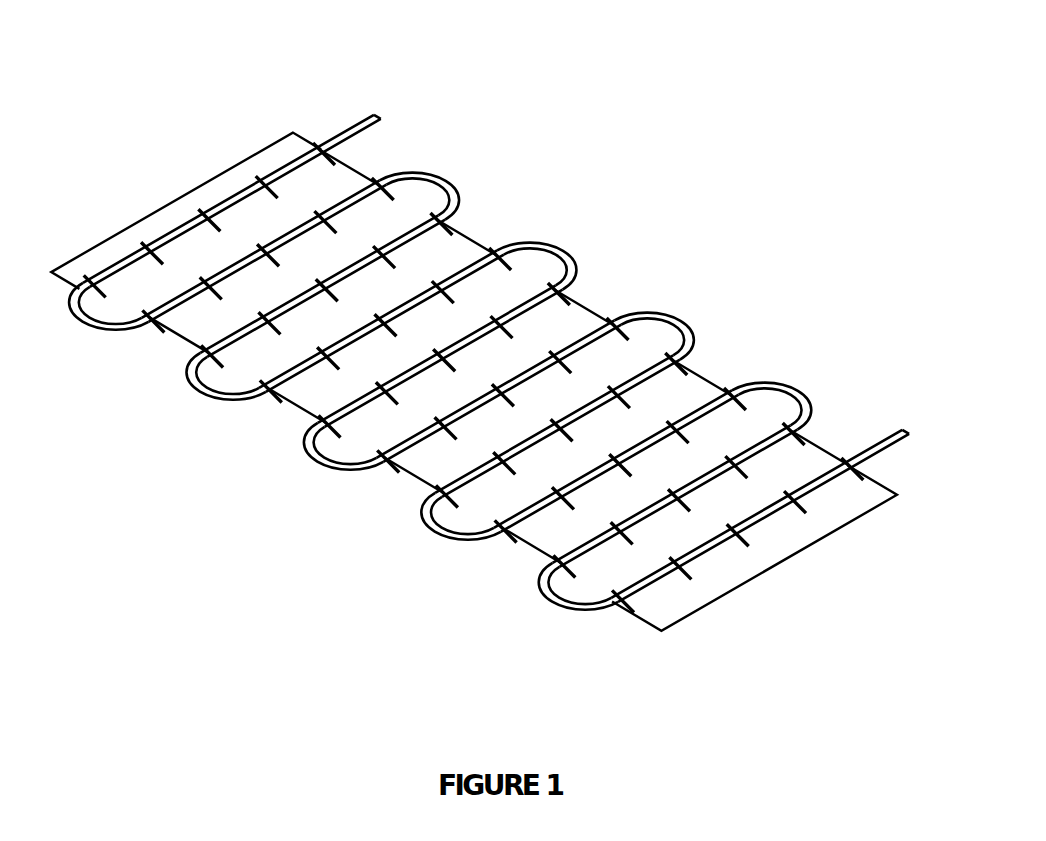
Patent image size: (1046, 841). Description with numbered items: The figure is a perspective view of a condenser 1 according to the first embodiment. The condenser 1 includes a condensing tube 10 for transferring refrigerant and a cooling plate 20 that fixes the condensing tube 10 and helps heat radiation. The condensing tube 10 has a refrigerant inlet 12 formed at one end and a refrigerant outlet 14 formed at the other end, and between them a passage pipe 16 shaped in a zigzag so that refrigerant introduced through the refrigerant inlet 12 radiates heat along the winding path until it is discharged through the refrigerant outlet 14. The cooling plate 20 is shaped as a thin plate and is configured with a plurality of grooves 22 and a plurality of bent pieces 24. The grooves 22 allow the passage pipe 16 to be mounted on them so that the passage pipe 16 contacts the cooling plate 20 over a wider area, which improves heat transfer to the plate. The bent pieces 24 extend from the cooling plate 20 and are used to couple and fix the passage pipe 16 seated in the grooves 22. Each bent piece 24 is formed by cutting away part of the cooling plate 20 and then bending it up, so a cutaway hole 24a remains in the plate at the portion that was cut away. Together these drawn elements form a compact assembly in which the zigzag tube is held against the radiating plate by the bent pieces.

The condenser 1 is at (503, 347).
The condensing tube 10 is at (640, 307).
The refrigerant inlet 12 is at (917, 428).
The refrigerant outlet 14 is at (430, 88).
The passage pipe 16 is at (423, 510).
The cooling plate 20 is at (773, 562).
The groove 22 is at (607, 612).
The bent piece 24 is at (630, 602).
The cutaway hole 24a is at (508, 543).